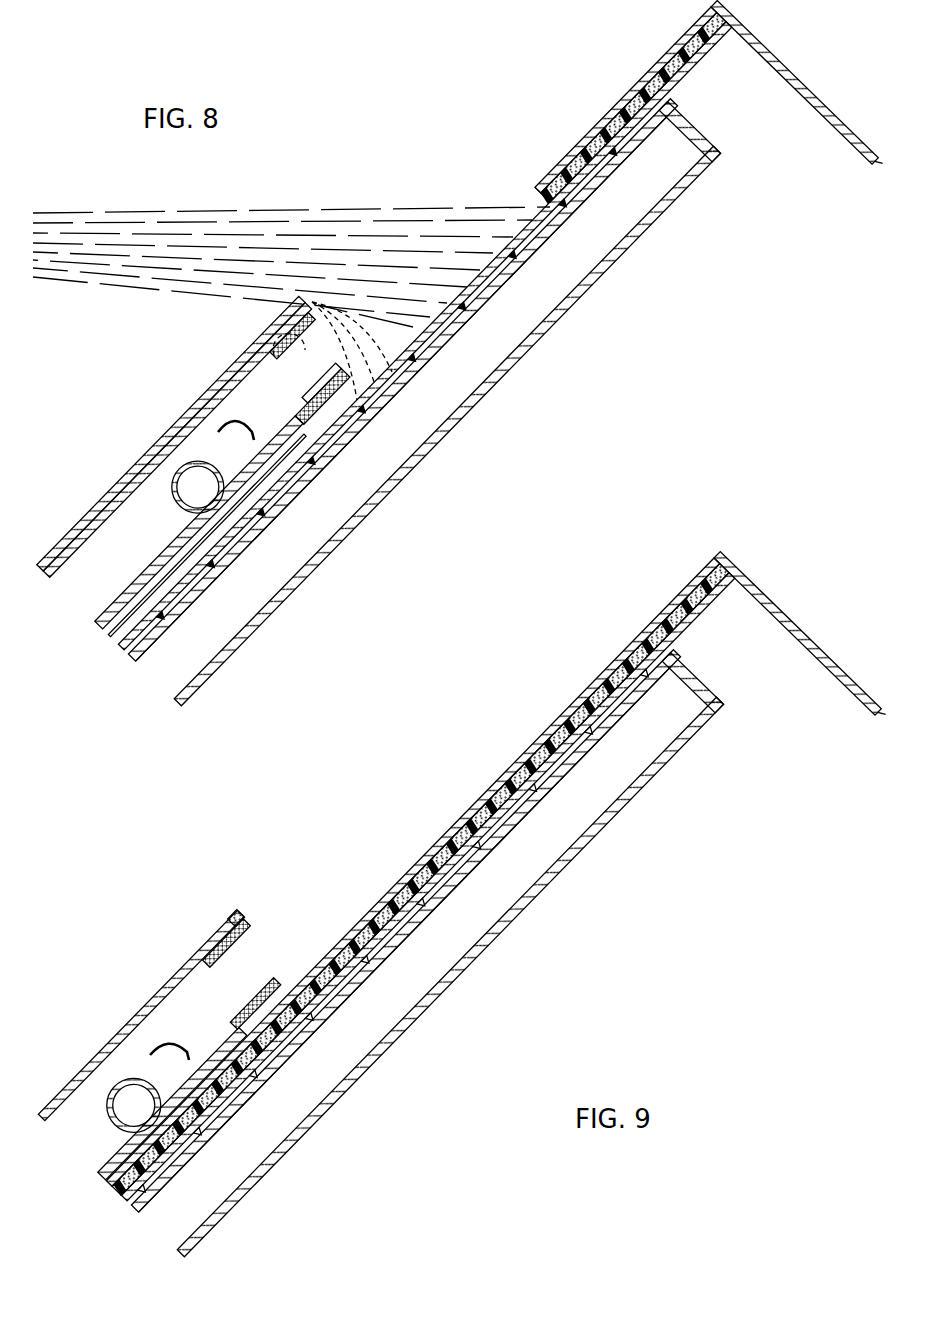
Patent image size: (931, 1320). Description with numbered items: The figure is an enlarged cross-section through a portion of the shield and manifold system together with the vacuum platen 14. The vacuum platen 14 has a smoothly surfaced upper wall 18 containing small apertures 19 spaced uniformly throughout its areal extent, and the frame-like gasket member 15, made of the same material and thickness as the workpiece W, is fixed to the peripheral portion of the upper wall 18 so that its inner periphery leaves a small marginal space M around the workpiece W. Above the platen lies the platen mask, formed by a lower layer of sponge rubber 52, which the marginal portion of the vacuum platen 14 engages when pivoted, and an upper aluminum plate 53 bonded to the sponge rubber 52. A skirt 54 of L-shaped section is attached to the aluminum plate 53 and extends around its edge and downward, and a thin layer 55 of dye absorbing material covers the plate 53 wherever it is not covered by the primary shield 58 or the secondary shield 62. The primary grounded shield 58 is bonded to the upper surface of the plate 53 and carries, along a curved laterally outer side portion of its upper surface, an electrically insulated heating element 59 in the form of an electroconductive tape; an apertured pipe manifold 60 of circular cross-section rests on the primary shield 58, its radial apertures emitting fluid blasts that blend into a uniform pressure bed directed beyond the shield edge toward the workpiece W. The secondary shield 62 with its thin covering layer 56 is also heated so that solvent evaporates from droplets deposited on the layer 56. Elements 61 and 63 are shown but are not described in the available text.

In FIG. 8, the vacuum platen 14 is at (385, 490).
In FIG. 9, the vacuum platen 14 is at (458, 978).
In FIG. 8, the frame-like gasket member 15 is at (655, 98).
In FIG. 9, the frame-like gasket member 15 is at (670, 647).
In FIG. 8, the upper wall 18 is at (400, 382).
In FIG. 9, the upper wall 18 is at (398, 932).
In FIG. 8, the apertures 19 is at (490, 293).
In FIG. 9, the apertures 19 is at (497, 838).
In FIG. 8, the layer of sponge rubber 52 is at (693, 65).
In FIG. 9, the layer of sponge rubber 52 is at (695, 616).
In FIG. 8, the aluminum plate 53 is at (693, 27).
In FIG. 9, the aluminum plate 53 is at (657, 622).
In FIG. 8, the skirt 54 is at (817, 115).
In FIG. 9, the skirt 54 is at (815, 660).
In FIG. 8, the thin layer 55 is at (667, 62).
In FIG. 9, the thin layer 55 is at (680, 590).
In FIG. 8, the thin layer 56 is at (267, 342).
In FIG. 9, the thin layer 56 is at (210, 950).
In FIG. 8, the primary grounded shield 58 is at (173, 557).
In FIG. 9, the primary grounded shield 58 is at (230, 1050).
In FIG. 8, the electrically insulated heating element 59 is at (327, 385).
In FIG. 9, the electrically insulated heating element 59 is at (243, 1020).
In FIG. 8, the apertured pipe manifold 60 is at (187, 508).
In FIG. 9, the apertured pipe manifold 60 is at (122, 1127).
In FIG. 8, the clip 61 is at (231, 434).
In FIG. 9, the clip 61 is at (173, 1057).
In FIG. 8, the secondary shield 62 is at (248, 406).
In FIG. 9, the secondary shield 62 is at (250, 930).
In FIG. 8, the insulating strip 63 is at (247, 363).
In FIG. 9, the insulating strip 63 is at (247, 951).
In FIG. 8, the marginal space M is at (553, 187).
In FIG. 8, the workpiece W is at (157, 610).